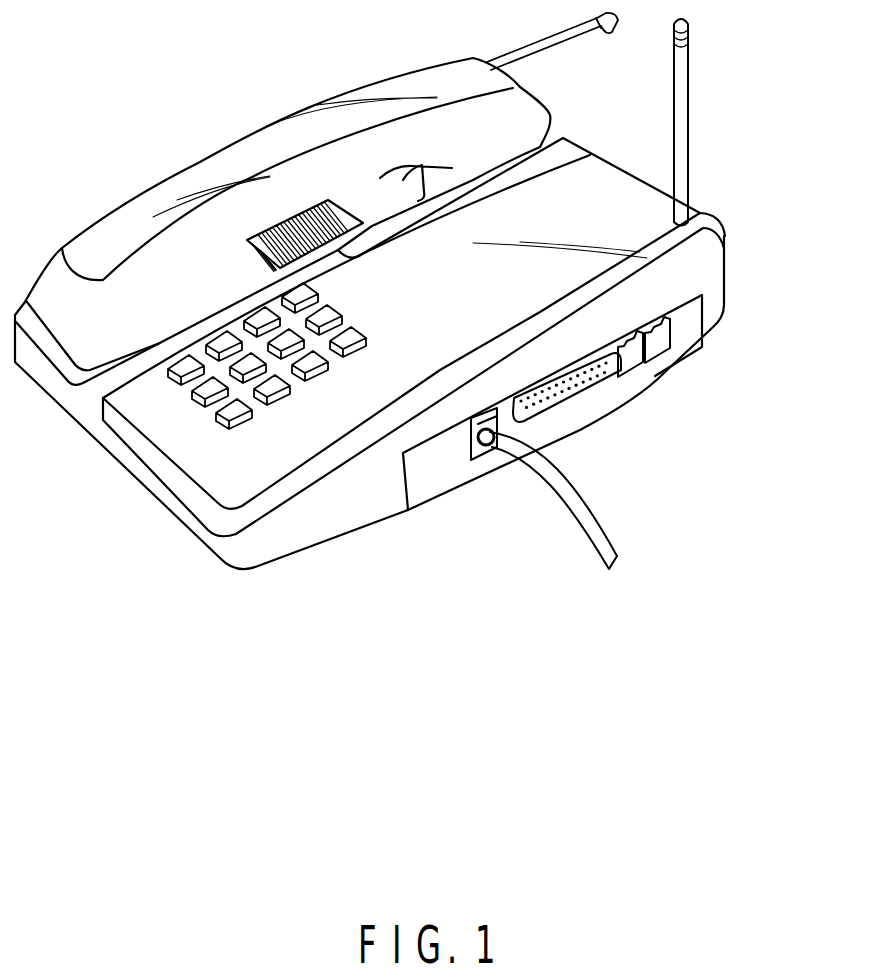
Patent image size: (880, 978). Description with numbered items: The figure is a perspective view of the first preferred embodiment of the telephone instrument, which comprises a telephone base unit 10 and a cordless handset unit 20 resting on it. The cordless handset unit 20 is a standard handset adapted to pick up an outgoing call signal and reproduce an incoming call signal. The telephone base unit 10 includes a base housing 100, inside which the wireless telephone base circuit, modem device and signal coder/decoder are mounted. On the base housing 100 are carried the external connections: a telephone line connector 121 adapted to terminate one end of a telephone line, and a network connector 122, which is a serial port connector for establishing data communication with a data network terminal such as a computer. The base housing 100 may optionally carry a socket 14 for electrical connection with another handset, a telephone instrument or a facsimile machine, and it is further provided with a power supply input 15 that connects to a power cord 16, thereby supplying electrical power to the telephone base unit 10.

The telephone base unit 10 is at (335, 560).
The base housing 100 is at (200, 523).
The cordless handset unit 20 is at (200, 124).
The power supply input 15 is at (478, 452).
The power cord 16 is at (583, 508).
The network connector 122 is at (585, 392).
The socket 14 is at (640, 354).
The telephone line connector 121 is at (665, 332).